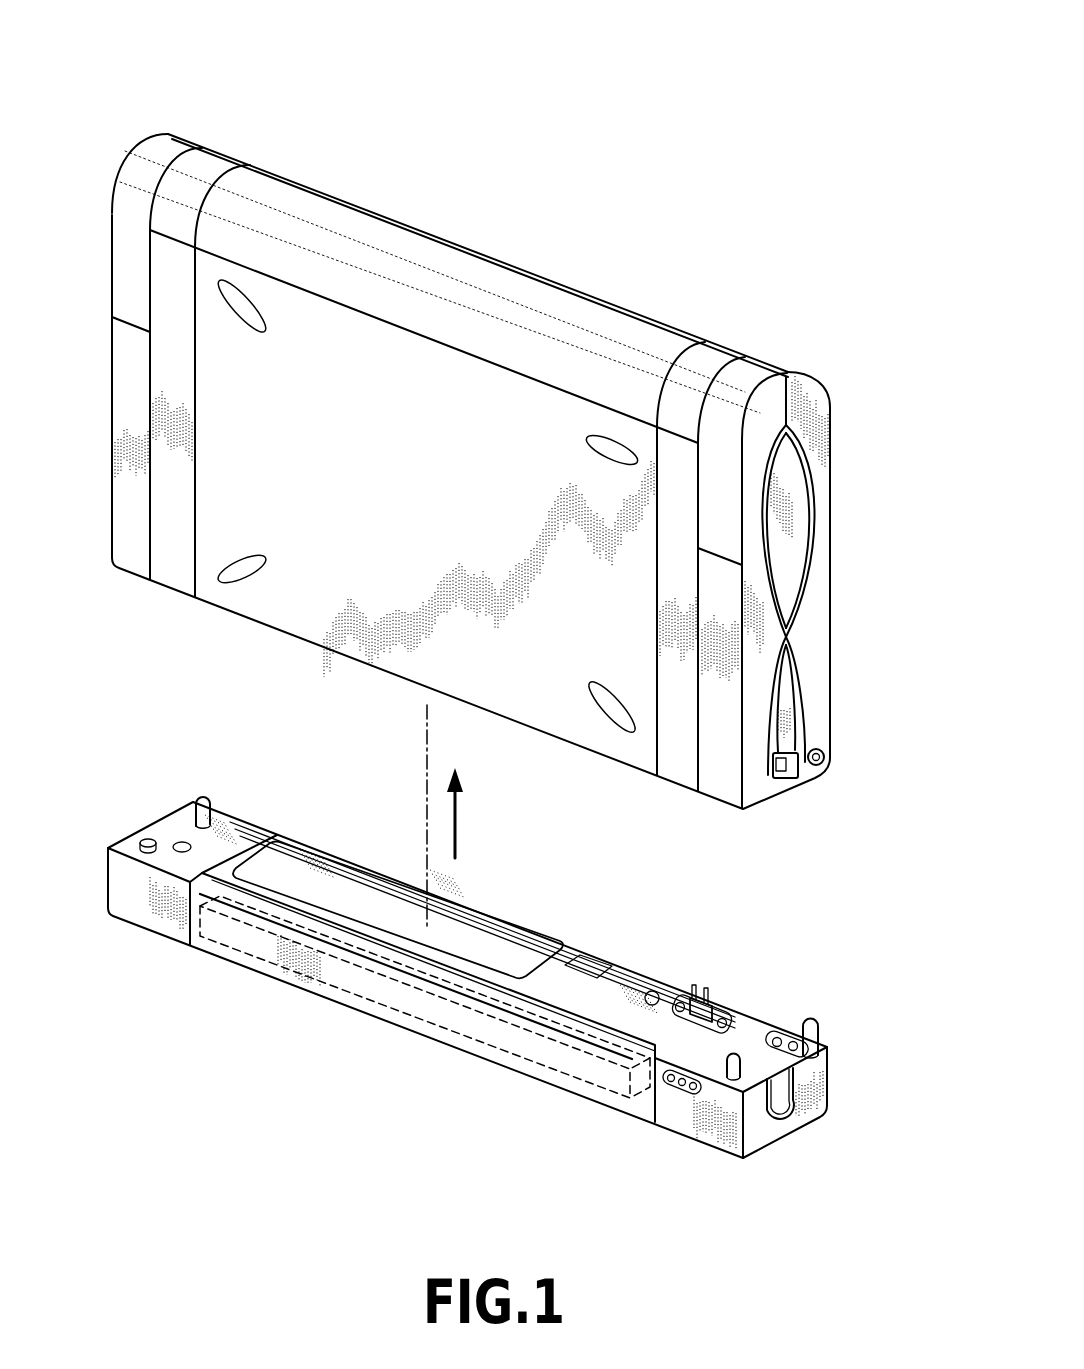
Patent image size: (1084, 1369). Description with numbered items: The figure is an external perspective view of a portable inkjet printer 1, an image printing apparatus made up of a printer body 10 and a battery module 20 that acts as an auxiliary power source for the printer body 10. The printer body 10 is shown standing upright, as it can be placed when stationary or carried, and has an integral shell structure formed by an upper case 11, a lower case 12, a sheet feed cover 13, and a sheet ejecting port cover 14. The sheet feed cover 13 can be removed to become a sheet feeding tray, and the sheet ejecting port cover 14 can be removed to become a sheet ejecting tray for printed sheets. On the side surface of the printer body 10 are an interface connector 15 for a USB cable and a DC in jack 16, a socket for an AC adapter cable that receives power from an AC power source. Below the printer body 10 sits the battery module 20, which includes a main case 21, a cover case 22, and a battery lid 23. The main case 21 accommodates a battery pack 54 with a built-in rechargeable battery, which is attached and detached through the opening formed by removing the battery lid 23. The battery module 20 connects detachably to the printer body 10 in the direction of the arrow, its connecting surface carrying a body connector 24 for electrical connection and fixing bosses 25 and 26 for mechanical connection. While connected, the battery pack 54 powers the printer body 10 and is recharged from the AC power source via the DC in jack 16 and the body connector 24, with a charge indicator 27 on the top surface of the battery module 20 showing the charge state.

The portable inkjet printer 1 is at (498, 597).
The printer body 10 is at (528, 471).
The upper case 11 is at (752, 382).
The lower case 12 is at (780, 367).
The sheet feed cover 13 is at (381, 214).
The sheet ejecting port cover 14 is at (492, 255).
The interface connector 15 is at (792, 752).
The DC in jack 16 is at (825, 756).
The battery module 20 is at (446, 953).
The main case 21 is at (143, 900).
The cover case 22 is at (170, 830).
The battery lid 23 is at (340, 997).
The body connector 24 is at (700, 985).
The fixing boss 25 is at (733, 1052).
The fixing boss 26 is at (203, 806).
The charge indicator 27 is at (677, 1088).
The battery pack 54 is at (497, 1050).